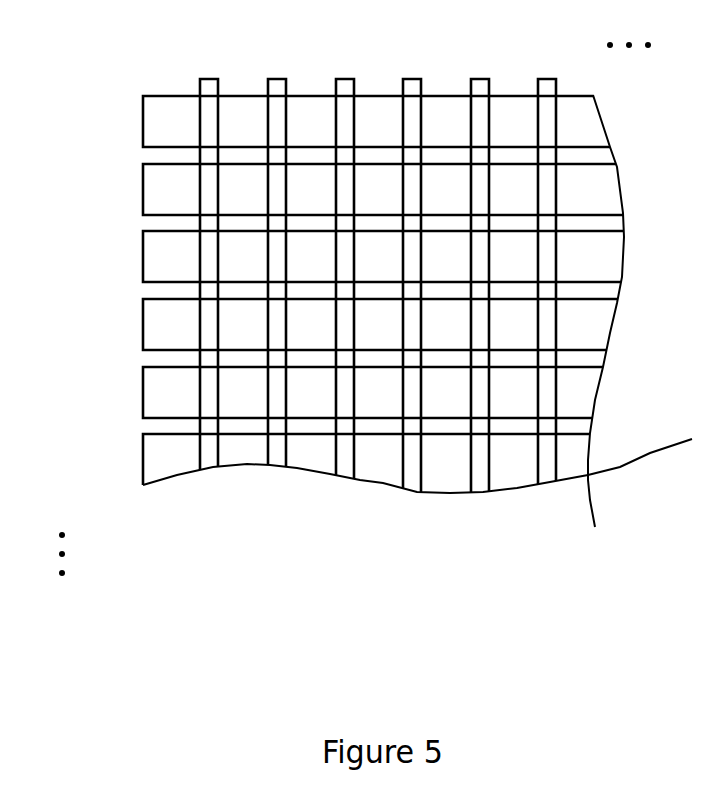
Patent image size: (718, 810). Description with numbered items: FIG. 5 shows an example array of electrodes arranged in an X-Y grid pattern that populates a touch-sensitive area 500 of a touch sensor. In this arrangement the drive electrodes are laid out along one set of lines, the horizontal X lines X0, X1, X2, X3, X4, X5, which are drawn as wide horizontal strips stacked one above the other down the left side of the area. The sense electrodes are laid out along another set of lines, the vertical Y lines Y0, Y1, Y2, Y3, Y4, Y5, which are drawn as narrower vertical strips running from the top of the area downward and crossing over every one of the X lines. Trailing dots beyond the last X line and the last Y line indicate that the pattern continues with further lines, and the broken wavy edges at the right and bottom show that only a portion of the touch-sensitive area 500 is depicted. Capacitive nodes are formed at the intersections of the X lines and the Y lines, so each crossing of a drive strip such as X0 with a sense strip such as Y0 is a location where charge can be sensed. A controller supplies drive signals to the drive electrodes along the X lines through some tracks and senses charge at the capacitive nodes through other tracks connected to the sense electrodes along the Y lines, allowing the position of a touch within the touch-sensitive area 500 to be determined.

The touch-sensitive area 500 is at (369, 339).
The X line X0 is at (143, 122).
The X line X1 is at (143, 190).
The X line X2 is at (143, 257).
The X line X3 is at (143, 325).
The X line X4 is at (143, 393).
The X line X5 is at (143, 460).
The Y line Y0 is at (208, 79).
The Y line Y1 is at (276, 79).
The Y line Y2 is at (343, 79).
The Y line Y3 is at (411, 79).
The Y line Y4 is at (478, 79).
The Y line Y5 is at (520, 258).